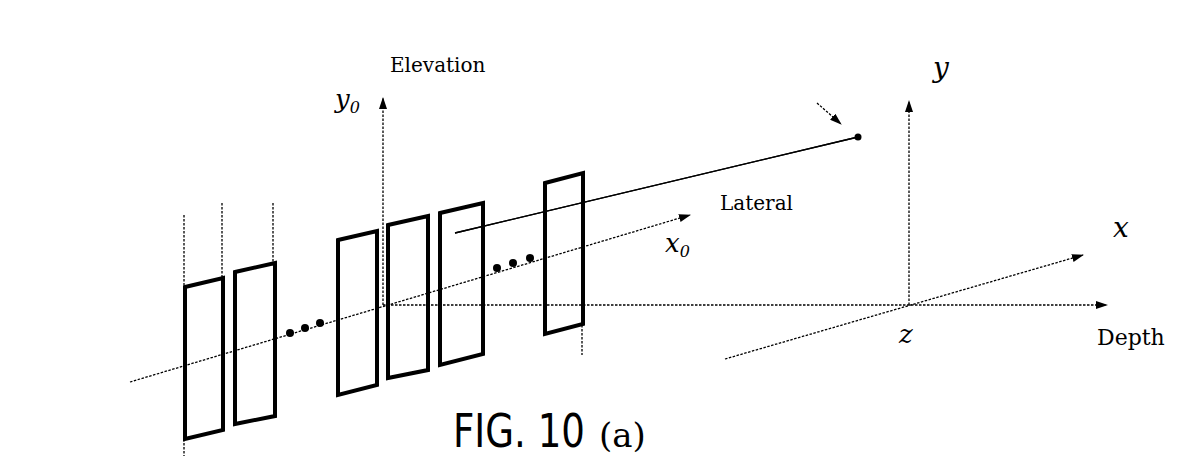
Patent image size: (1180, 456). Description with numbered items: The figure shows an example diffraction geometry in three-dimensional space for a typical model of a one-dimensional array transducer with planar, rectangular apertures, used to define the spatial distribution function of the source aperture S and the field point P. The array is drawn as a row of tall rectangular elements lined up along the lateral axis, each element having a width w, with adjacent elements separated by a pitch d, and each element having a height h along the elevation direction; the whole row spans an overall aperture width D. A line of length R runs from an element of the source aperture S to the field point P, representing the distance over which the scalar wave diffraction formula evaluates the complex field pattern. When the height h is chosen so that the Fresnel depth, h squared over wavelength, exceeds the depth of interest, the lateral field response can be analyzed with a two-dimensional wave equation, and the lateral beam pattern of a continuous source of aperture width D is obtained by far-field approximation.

The field point P is at (658, 144).
The distance R is at (656, 185).
The source aperture S is at (456, 217).
The element width w is at (222, 245).
The element pitch d is at (273, 233).
The height h is at (168, 438).
The aperture width D is at (188, 455).